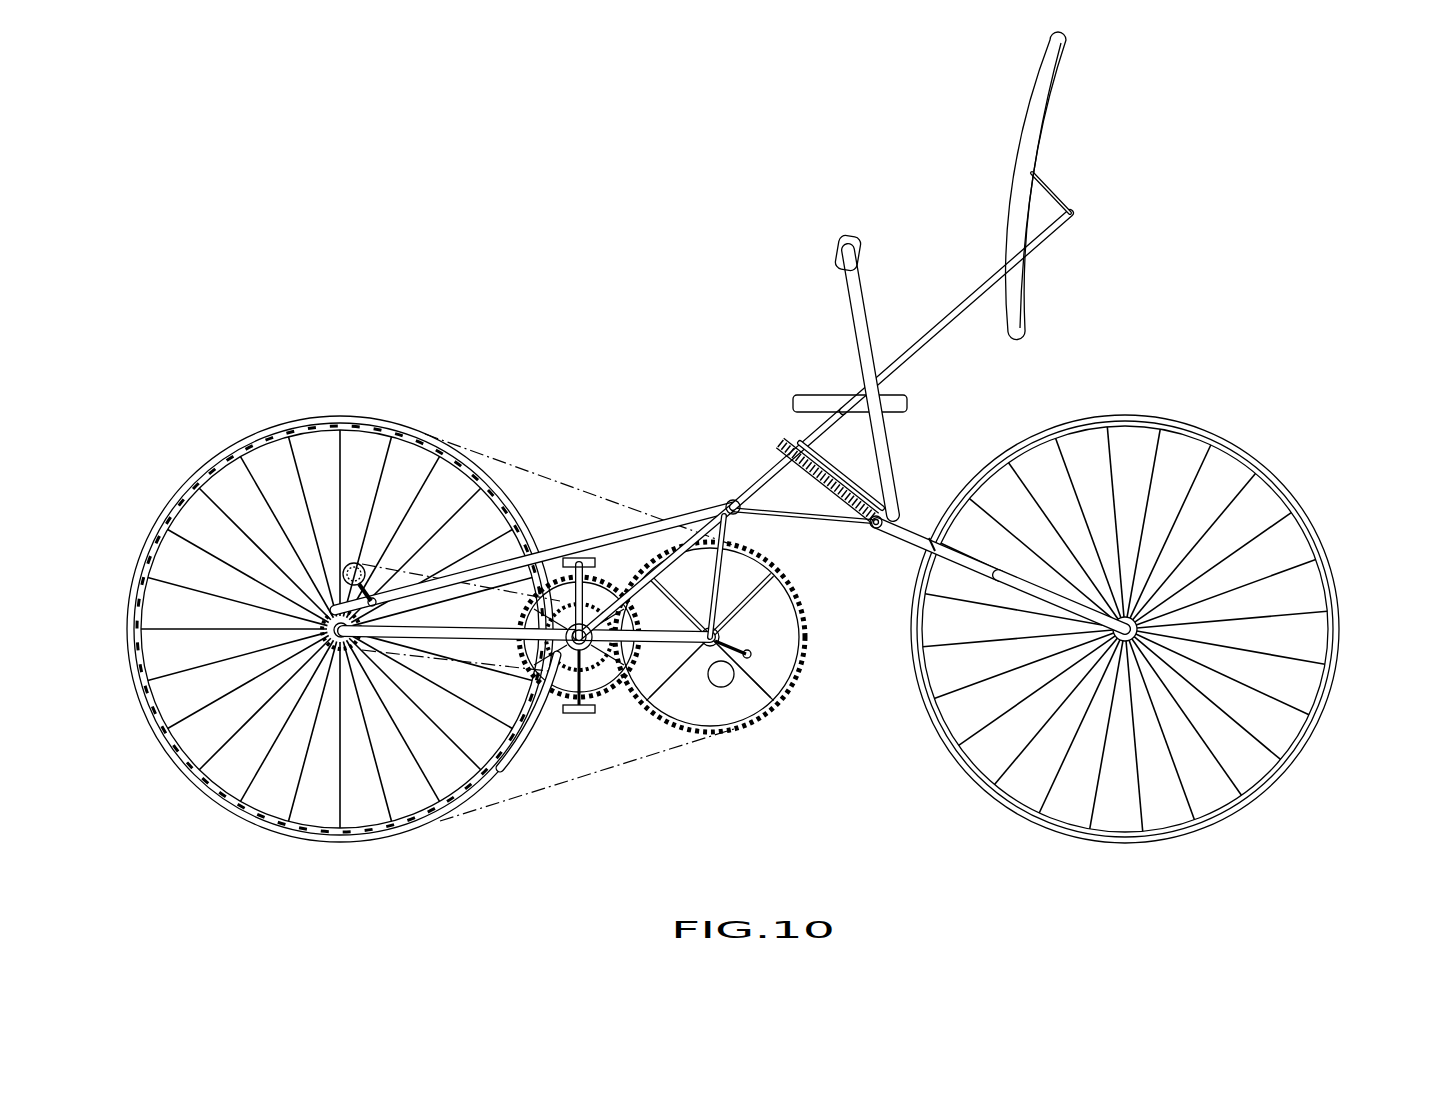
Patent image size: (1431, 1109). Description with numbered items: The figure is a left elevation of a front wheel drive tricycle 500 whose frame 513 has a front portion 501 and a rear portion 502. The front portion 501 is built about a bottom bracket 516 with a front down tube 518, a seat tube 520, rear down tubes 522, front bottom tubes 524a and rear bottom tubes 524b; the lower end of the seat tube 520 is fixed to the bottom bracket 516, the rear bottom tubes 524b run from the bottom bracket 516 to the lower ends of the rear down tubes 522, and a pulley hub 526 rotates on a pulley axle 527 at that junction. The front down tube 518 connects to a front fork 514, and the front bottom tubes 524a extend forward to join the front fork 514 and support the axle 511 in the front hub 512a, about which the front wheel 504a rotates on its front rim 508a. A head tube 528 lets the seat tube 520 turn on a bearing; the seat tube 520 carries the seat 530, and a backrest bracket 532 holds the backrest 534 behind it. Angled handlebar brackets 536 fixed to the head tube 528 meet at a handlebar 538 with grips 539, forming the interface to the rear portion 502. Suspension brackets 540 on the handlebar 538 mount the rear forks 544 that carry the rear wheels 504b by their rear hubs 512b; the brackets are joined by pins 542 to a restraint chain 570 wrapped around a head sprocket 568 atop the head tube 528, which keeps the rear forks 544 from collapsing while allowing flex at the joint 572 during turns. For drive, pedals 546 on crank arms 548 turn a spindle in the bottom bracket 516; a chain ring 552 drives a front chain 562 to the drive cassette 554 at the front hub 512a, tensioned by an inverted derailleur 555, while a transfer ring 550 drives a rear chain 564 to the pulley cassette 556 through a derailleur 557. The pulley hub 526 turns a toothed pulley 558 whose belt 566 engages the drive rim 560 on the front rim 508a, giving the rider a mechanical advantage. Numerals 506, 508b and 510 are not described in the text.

The tricycle 500 is at (478, 265).
The front portion 501 is at (730, 594).
The rear portion 502 is at (1150, 561).
The front wheel 504a is at (350, 846).
The rear wheels 504b is at (1255, 796).
The rim 506 is at (383, 844).
The front rim 508a is at (237, 452).
The front wheel hub 508b is at (1321, 575).
The rim inner edge 510 is at (217, 500).
The axle 511 is at (310, 633).
The front hub 512a is at (305, 648).
The rear hub 512b is at (1158, 575).
The frame 513 is at (722, 492).
The front fork 514 is at (417, 606).
The bottom bracket 516 is at (527, 664).
The front down tube 518 is at (679, 522).
The seat tube 520 is at (706, 518).
The rear down tubes 522 is at (736, 509).
The front bottom tubes 524a is at (473, 637).
The rear bottom tubes 524b is at (672, 642).
The pulley hub 526 is at (748, 680).
The pulley axle 527 is at (717, 653).
The head tube 528 is at (758, 483).
The seat 530 is at (810, 397).
The backrest bracket 532 is at (1040, 240).
The backrest 534 is at (1043, 78).
The handlebar brackets 536 is at (820, 511).
The handlebar 538 is at (871, 320).
The grips 539 is at (852, 245).
The suspension brackets 540 is at (923, 517).
The pins 542 is at (880, 535).
The rear fork 544 is at (1023, 575).
The pedals 546 is at (563, 557).
The crank arms 548 is at (578, 556).
The transfer ring 550 is at (580, 556).
The chain ring 552 is at (593, 657).
The drive cassette 554 is at (338, 664).
The derailleur 555 is at (348, 562).
The pulley cassette 556 is at (731, 637).
The derailleur 557 is at (753, 653).
The pulley 558 is at (733, 653).
The drive rim 560 is at (397, 442).
The front chain 562 is at (437, 662).
The rear chain 564 is at (618, 688).
The belt 566 is at (657, 752).
The head sprocket 568 is at (775, 440).
The restraint chain 570 is at (825, 488).
The joint 572 is at (873, 565).